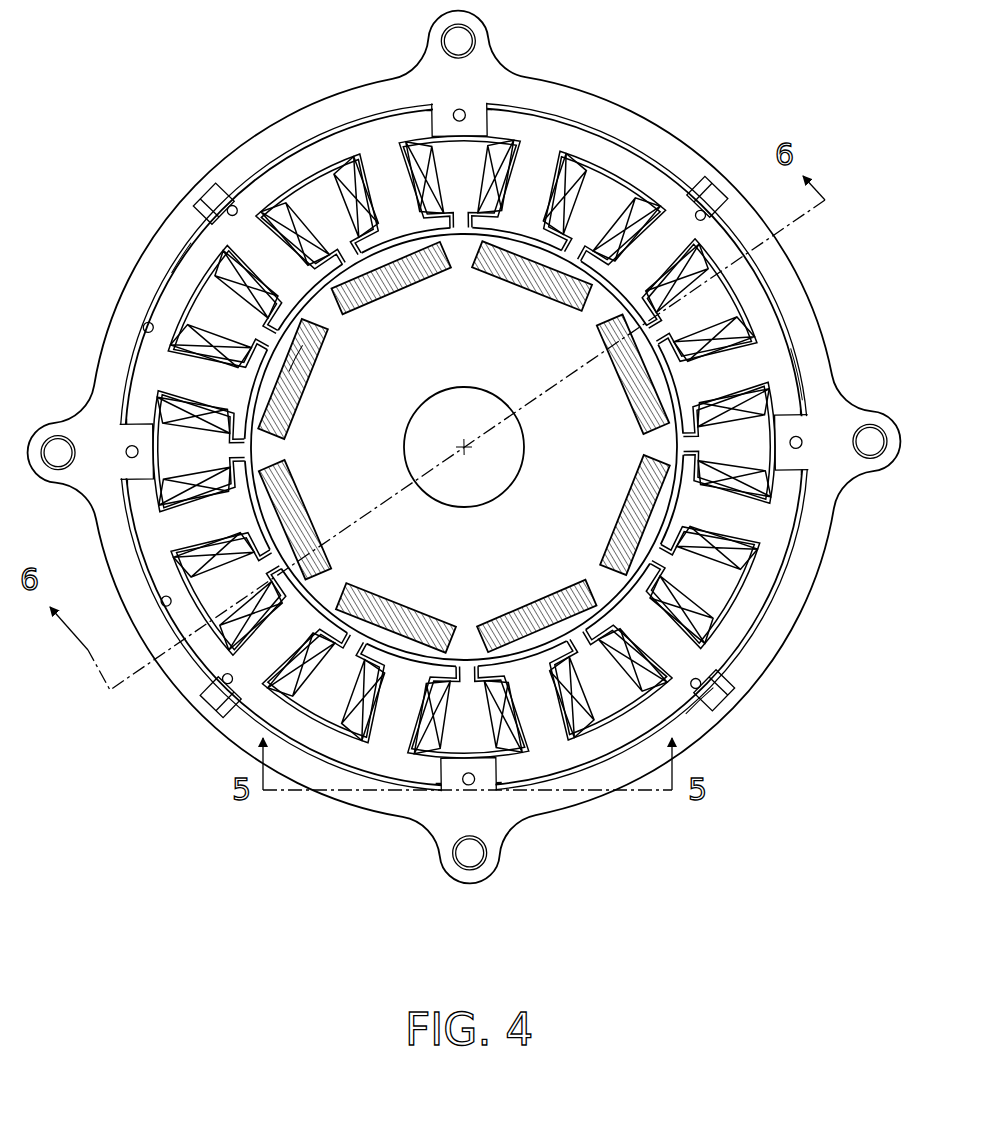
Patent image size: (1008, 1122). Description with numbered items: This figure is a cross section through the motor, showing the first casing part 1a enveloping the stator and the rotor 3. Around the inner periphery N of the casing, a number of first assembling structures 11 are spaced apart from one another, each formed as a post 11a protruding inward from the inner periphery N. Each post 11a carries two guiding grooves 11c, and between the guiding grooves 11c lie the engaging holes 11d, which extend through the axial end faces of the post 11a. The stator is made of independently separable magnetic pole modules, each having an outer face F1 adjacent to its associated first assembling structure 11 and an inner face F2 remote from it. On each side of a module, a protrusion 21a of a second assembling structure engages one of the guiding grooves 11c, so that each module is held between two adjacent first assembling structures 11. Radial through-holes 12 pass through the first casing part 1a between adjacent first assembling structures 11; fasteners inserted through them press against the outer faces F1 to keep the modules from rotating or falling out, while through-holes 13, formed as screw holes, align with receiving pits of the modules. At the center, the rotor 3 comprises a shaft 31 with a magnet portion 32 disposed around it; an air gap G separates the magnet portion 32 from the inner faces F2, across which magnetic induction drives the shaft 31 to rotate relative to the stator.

The first casing part 1a is at (237, 154).
The protrusion 21a is at (440, 790).
The engaging hole 11d is at (468, 788).
The guiding groove 11c is at (450, 790).
The radial through-hole 12 is at (742, 172).
The first assembling structure 11 is at (435, 795).
The post 11a is at (592, 740).
The rotor 3 is at (640, 602).
The magnet portion 32 is at (622, 580).
The shaft 31 is at (505, 462).
The air gap G is at (793, 323).
The outer face F1 is at (200, 232).
The inner face F2 is at (298, 350).
The inner periphery N is at (698, 705).
The through-hole 13 is at (178, 287).